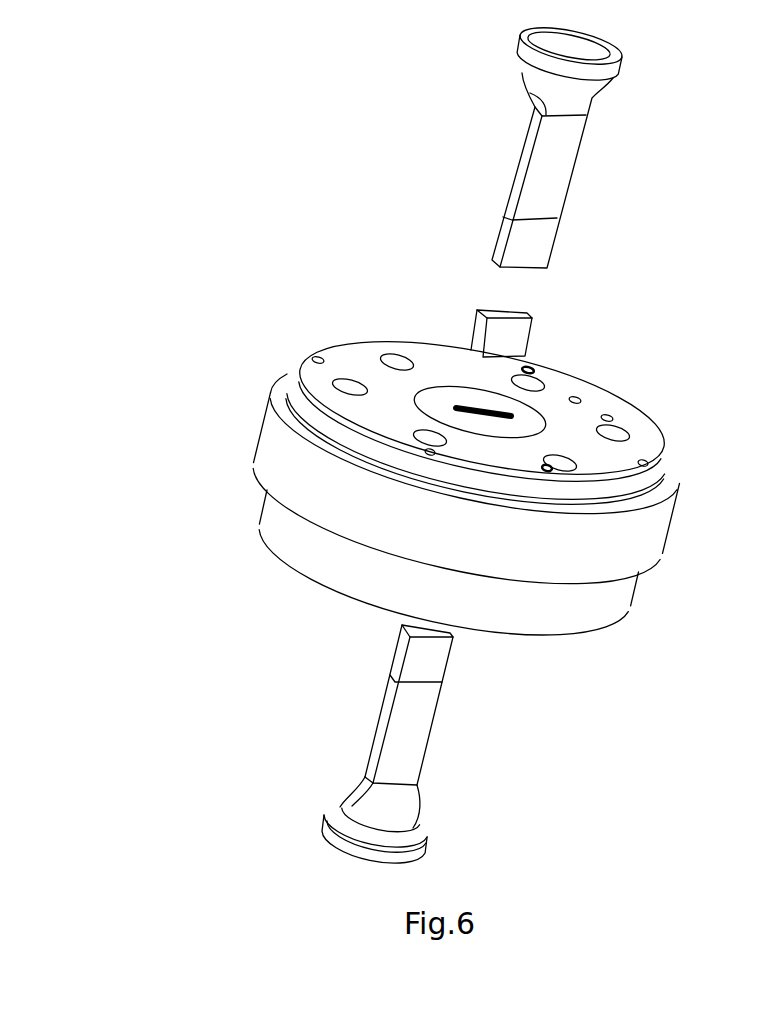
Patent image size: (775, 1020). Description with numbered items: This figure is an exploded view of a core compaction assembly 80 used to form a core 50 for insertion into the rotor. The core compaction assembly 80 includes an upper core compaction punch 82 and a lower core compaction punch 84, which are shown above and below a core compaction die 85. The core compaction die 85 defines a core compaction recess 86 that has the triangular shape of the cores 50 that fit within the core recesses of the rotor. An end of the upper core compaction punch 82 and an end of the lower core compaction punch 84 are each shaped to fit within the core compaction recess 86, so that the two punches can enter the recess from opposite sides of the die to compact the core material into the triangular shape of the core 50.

The core compaction assembly 80 is at (212, 212).
The upper core compaction punch 82 is at (557, 178).
The lower core compaction punch 84 is at (420, 737).
The core compaction die 85 is at (657, 520).
The core compaction recess 86 is at (457, 404).
The core 50 is at (522, 330).